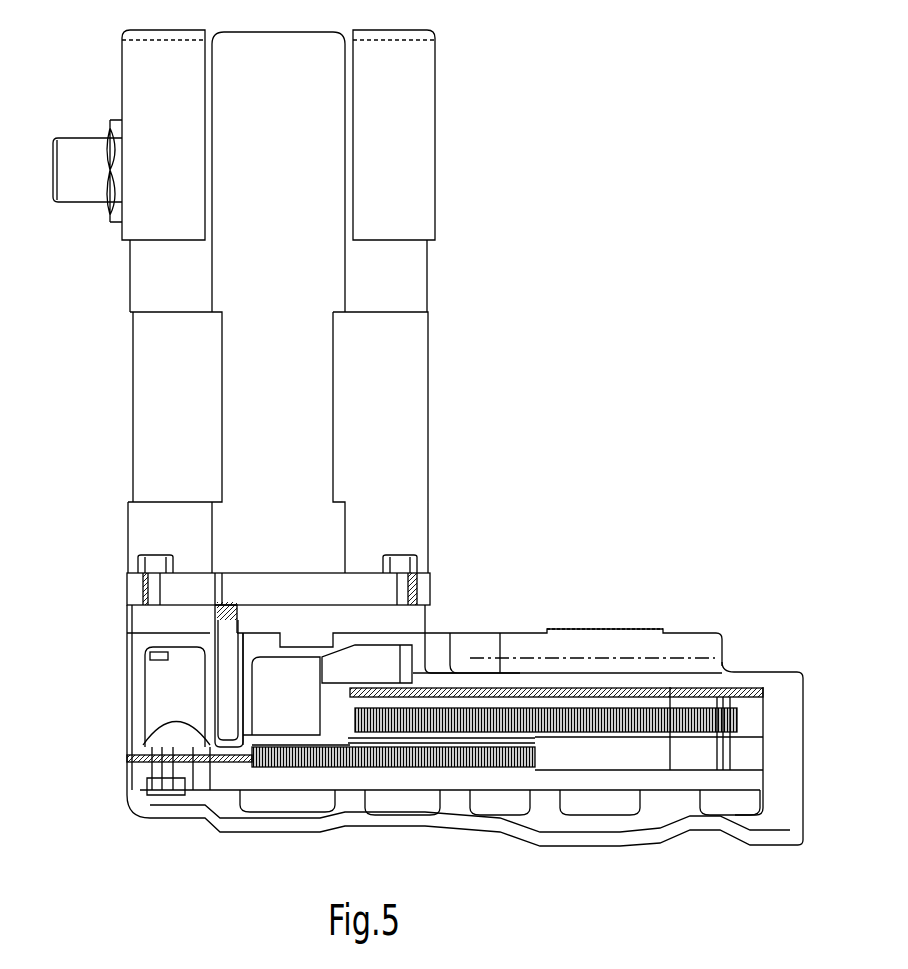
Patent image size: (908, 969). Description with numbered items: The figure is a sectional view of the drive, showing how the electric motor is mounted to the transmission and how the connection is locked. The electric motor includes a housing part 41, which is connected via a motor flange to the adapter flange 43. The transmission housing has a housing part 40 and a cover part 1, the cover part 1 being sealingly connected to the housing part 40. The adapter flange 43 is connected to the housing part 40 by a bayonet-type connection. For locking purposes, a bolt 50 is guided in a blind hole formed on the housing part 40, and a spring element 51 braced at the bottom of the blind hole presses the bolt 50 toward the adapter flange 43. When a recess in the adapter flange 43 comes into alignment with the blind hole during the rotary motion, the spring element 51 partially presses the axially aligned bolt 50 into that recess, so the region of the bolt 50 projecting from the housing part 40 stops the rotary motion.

The cover part 1 is at (787, 813).
The housing part 40 is at (712, 649).
The housing part 41 is at (401, 412).
The adapter flange 43 is at (402, 620).
The bolt 50 is at (228, 677).
The spring element 51 is at (231, 725).